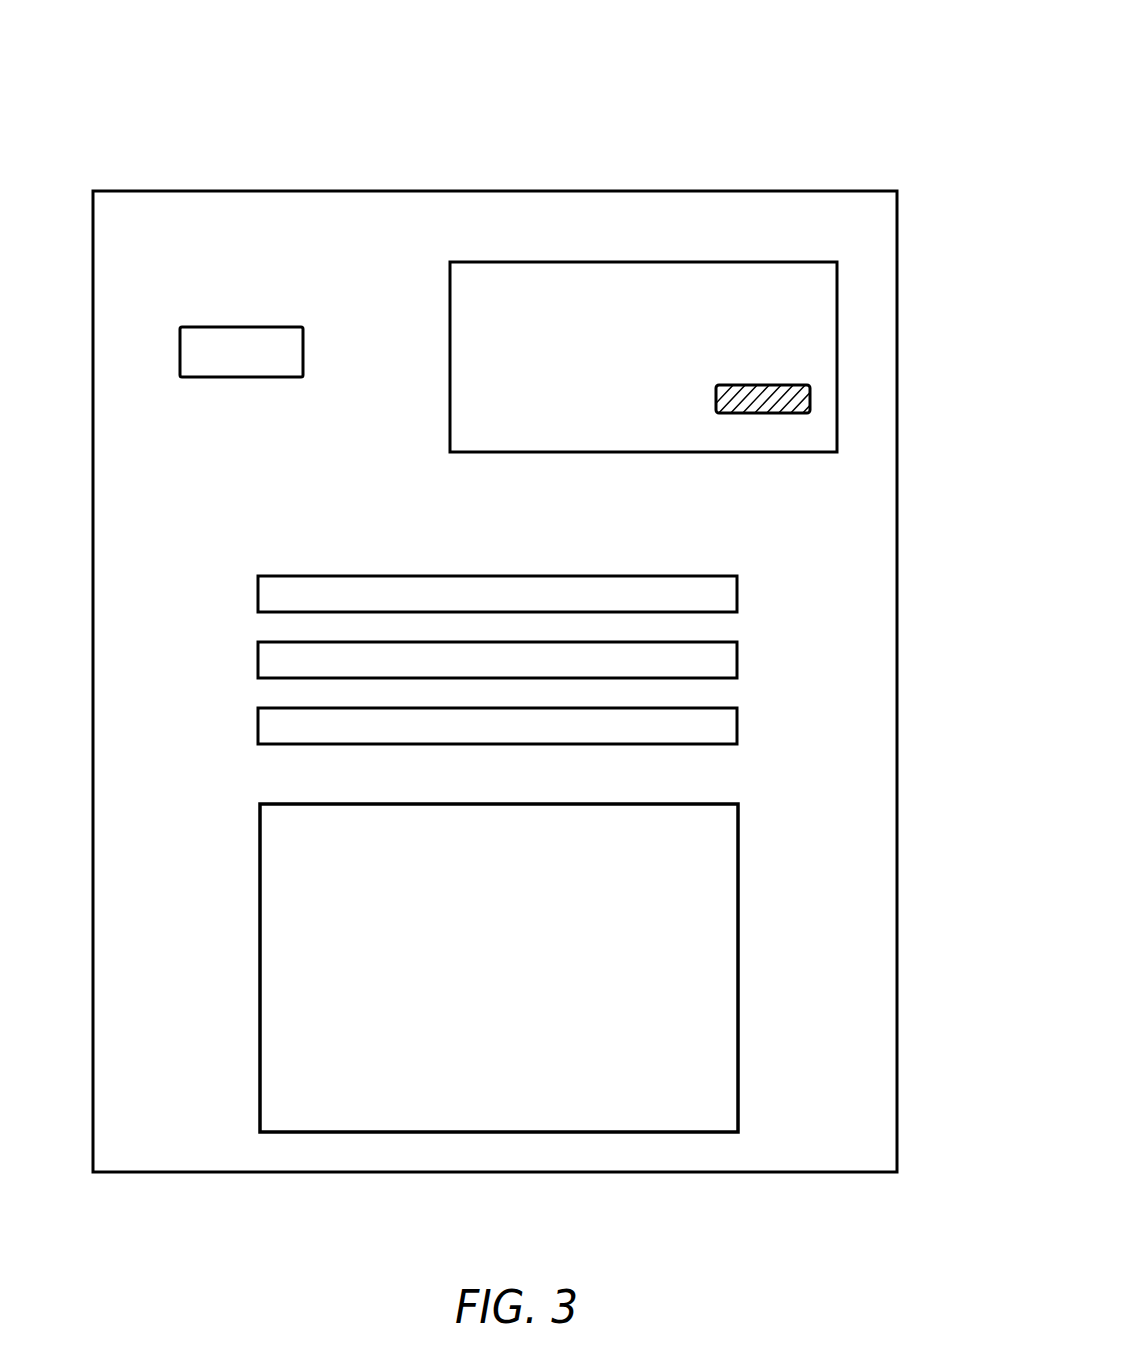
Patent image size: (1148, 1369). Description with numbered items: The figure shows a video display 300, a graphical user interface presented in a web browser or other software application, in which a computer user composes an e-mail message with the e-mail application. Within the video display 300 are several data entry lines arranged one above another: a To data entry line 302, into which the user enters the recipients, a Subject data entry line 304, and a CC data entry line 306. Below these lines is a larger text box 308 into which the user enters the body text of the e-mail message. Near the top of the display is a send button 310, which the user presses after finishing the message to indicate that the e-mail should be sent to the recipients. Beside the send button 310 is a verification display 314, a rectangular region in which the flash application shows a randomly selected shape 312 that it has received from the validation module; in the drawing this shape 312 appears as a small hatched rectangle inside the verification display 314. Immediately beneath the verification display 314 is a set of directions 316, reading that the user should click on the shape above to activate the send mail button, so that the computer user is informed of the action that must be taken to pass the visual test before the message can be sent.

The video display 300 is at (706, 139).
The To data entry line 302 is at (737, 592).
The Subject data entry line 304 is at (737, 658).
The CC data entry line 306 is at (737, 725).
The text box 308 is at (738, 982).
The send button 310 is at (243, 327).
The randomly selected shape 312 is at (763, 385).
The verification display 314 is at (450, 357).
The set of directions 316 is at (475, 474).